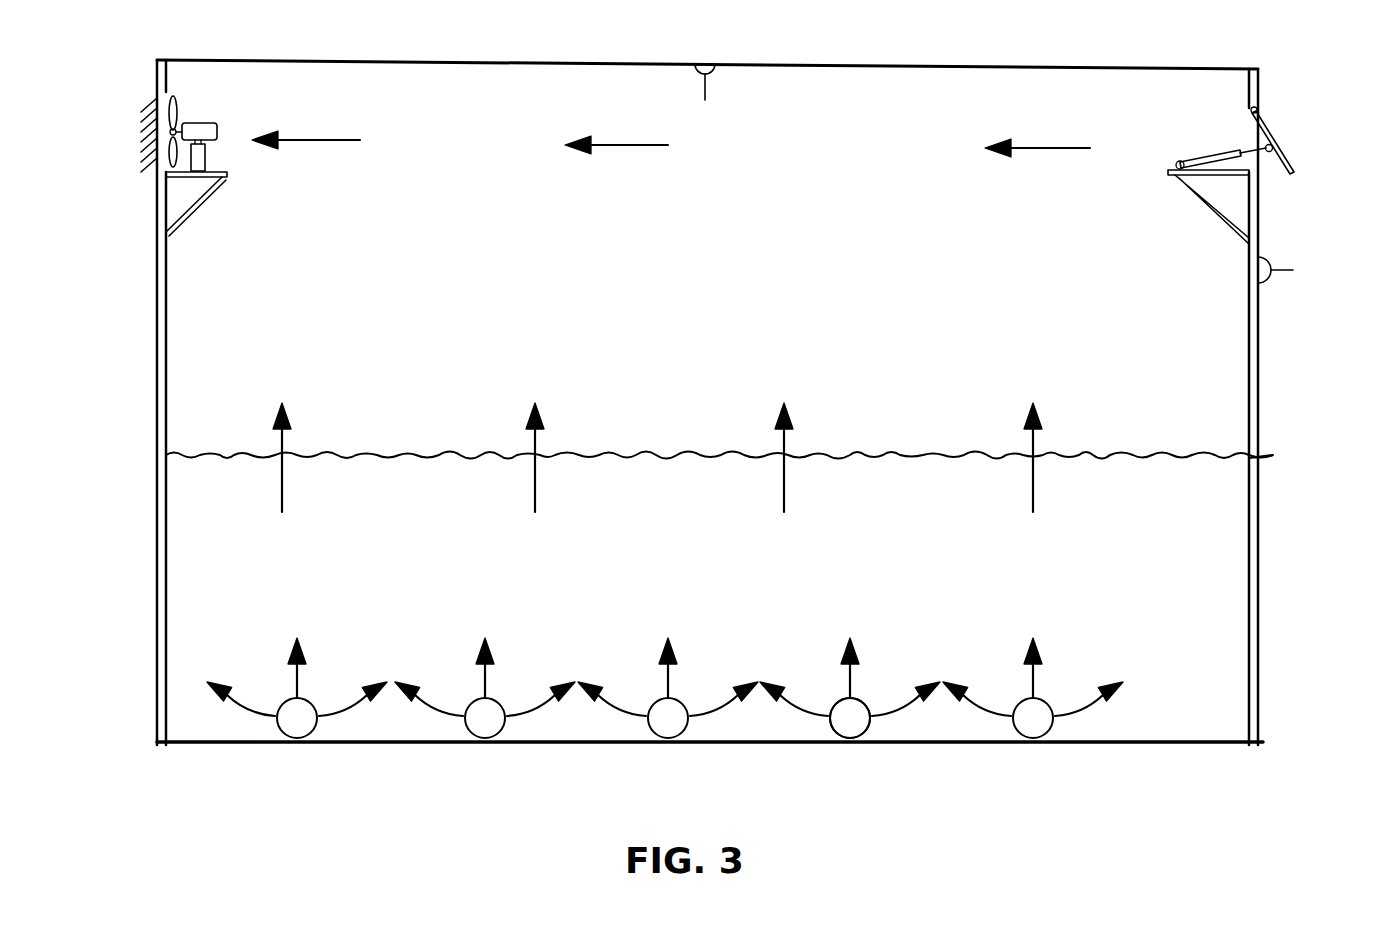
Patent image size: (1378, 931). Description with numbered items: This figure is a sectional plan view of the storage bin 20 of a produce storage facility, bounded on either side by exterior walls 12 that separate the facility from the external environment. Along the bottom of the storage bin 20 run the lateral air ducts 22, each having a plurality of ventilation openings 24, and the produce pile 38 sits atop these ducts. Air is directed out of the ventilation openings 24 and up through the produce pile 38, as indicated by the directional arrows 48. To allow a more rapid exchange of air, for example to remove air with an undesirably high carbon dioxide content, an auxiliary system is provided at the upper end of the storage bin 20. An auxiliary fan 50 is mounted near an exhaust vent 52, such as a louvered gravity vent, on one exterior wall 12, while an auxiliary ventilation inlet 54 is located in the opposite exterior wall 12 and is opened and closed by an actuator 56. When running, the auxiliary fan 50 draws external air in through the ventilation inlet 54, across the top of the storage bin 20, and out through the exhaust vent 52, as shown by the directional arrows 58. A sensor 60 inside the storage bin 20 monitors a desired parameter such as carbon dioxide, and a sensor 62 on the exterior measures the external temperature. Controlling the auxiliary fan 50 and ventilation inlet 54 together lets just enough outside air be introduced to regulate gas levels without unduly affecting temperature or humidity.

The exterior wall 12 is at (157, 315).
The storage bin 20 is at (697, 338).
The lateral air duct 22 is at (867, 707).
The ventilation opening 24 is at (300, 720).
The produce pile 38 is at (868, 460).
The directional arrow 48 is at (782, 472).
The auxiliary fan 50 is at (188, 123).
The exhaust vent 52 is at (147, 102).
The auxiliary ventilation inlet 54 is at (1270, 120).
The actuator 56 is at (1181, 160).
The directional arrow 58 is at (310, 140).
The sensor 60 is at (713, 74).
The sensor 62 is at (1263, 258).